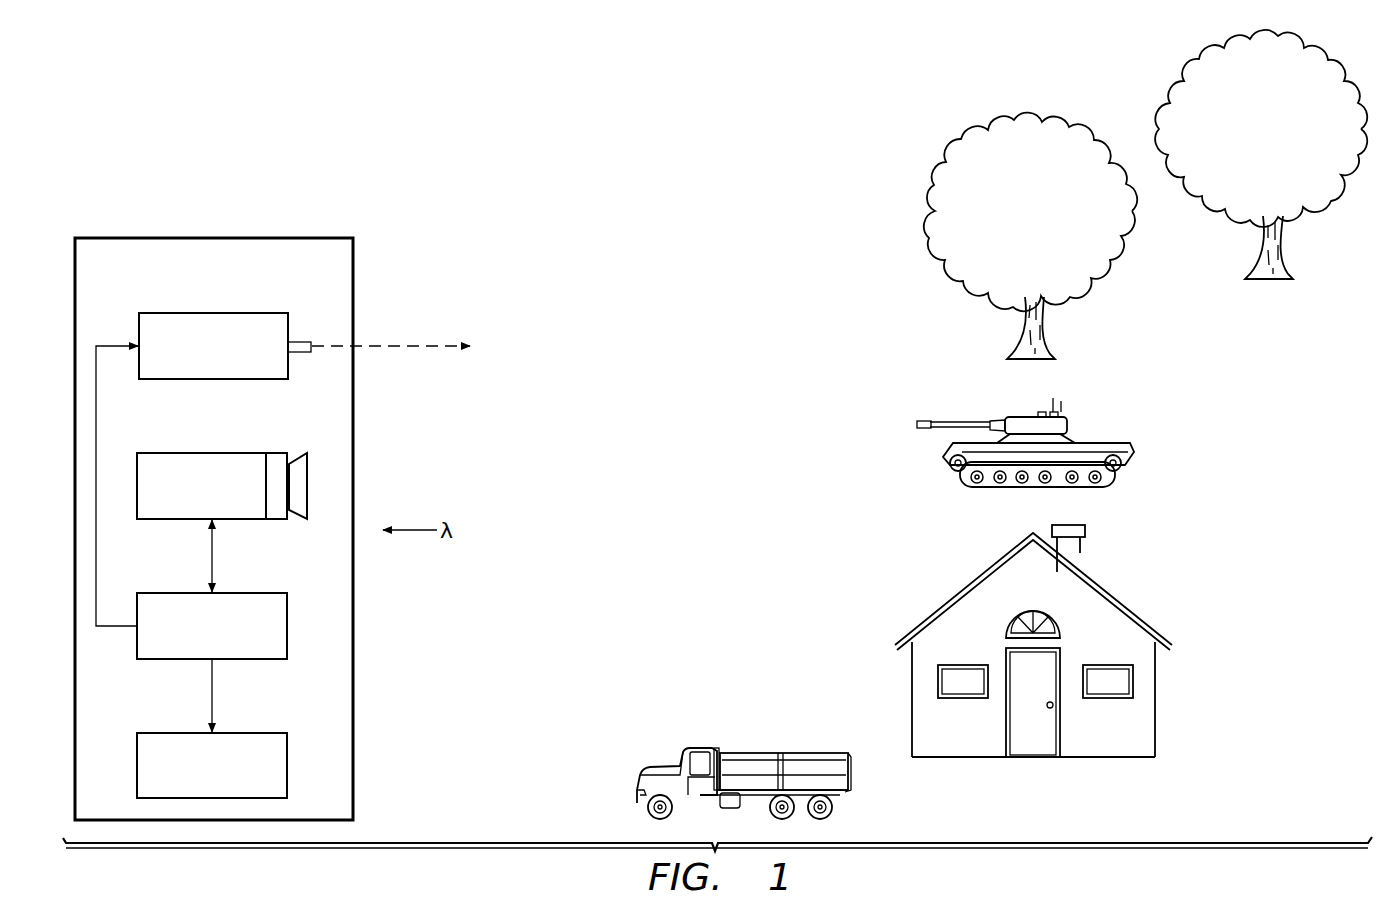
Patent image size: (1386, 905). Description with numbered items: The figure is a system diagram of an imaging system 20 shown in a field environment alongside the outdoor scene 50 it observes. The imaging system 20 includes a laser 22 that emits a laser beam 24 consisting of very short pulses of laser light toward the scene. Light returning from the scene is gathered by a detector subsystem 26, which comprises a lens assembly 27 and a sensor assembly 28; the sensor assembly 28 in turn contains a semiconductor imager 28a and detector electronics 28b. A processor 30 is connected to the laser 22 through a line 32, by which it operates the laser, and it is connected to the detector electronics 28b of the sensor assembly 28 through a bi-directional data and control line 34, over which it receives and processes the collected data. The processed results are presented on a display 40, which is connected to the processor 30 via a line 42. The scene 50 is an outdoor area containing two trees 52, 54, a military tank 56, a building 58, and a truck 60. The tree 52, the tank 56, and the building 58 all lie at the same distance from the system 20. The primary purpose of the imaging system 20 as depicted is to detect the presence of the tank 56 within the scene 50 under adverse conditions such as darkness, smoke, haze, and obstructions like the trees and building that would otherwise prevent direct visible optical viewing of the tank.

The imaging system 20 is at (213, 238).
The laser 22 is at (212, 313).
The laser beam 24 is at (392, 346).
The detector subsystem 26 is at (298, 438).
The lens assembly 27 is at (309, 517).
The sensor assembly 28 is at (152, 441).
The semiconductor imager 28a is at (277, 453).
The detector electronics 28b is at (200, 453).
The processor 30 is at (234, 593).
The line 32 is at (113, 346).
The bi-directional data and control line 34 is at (208, 556).
The display 40 is at (234, 733).
The line 42 is at (208, 696).
The scene 50 is at (562, 160).
The tree 52 is at (975, 155).
The tree 54 is at (1215, 73).
The military tank 56 is at (1093, 441).
The building 58 is at (1155, 693).
The truck 60 is at (705, 748).